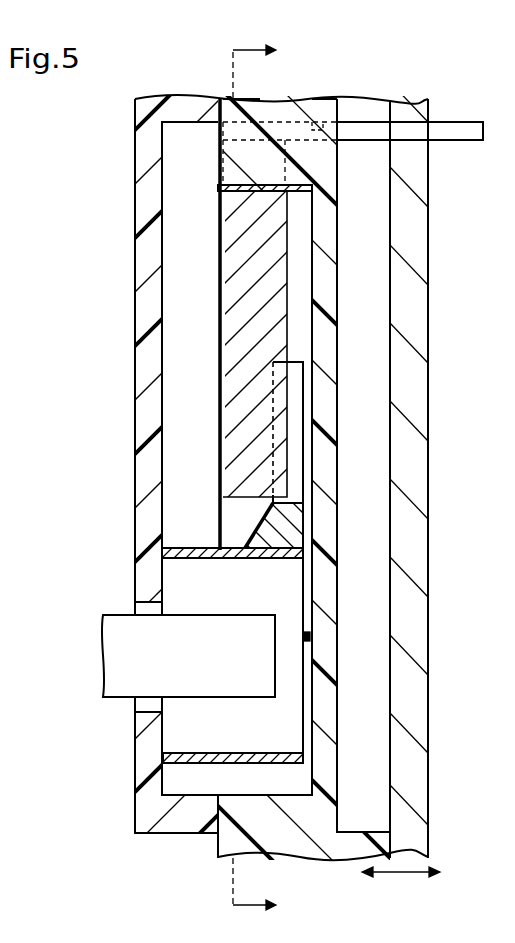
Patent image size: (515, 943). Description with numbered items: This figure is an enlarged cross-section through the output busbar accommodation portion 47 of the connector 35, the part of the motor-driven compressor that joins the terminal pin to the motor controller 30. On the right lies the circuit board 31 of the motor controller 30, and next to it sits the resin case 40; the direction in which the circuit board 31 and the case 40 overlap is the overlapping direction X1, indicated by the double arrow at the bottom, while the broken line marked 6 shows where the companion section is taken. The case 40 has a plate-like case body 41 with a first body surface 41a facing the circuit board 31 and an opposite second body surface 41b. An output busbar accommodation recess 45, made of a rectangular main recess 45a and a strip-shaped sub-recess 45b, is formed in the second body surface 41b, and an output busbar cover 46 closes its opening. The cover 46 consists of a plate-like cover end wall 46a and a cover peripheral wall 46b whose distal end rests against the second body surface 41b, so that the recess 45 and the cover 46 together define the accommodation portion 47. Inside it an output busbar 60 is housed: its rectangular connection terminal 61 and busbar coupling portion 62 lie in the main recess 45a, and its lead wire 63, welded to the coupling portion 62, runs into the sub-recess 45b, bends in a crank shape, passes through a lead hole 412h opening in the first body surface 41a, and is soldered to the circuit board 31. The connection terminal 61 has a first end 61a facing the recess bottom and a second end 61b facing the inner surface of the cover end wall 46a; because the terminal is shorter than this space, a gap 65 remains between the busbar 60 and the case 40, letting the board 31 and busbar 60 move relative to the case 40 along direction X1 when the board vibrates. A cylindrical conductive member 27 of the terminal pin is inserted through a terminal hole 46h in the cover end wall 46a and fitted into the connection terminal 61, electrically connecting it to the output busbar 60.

The connector 35 is at (135, 95).
The motor controller 30 is at (432, 85).
The output busbar cover 46 is at (136, 269).
The cover end wall 46a is at (136, 318).
The output busbar accommodation portion 47 is at (186, 350).
The terminal hole 46h is at (138, 703).
The cover peripheral wall 46b is at (181, 830).
The case body 41 is at (338, 286).
The first body surface 41a is at (338, 468).
The second body surface 41b is at (222, 118).
The case 40 is at (318, 101).
The lead hole 412h is at (322, 122).
The output busbar accommodation recess 45 is at (280, 792).
The main recess 45a is at (236, 790).
The sub-recess 45b is at (249, 108).
The busbar coupling portion 62 is at (305, 393).
The connection terminal 61 is at (178, 549).
The first end 61a is at (306, 566).
The second end 61b is at (161, 566).
The conductive member 27 is at (218, 622).
The gap 65 is at (311, 637).
The output busbar 60 is at (162, 763).
The circuit board 31 is at (428, 702).
The lead wire 63 is at (462, 130).
The section line 6- 6 is at (265, 477).
The overlapping direction X1 is at (400, 875).